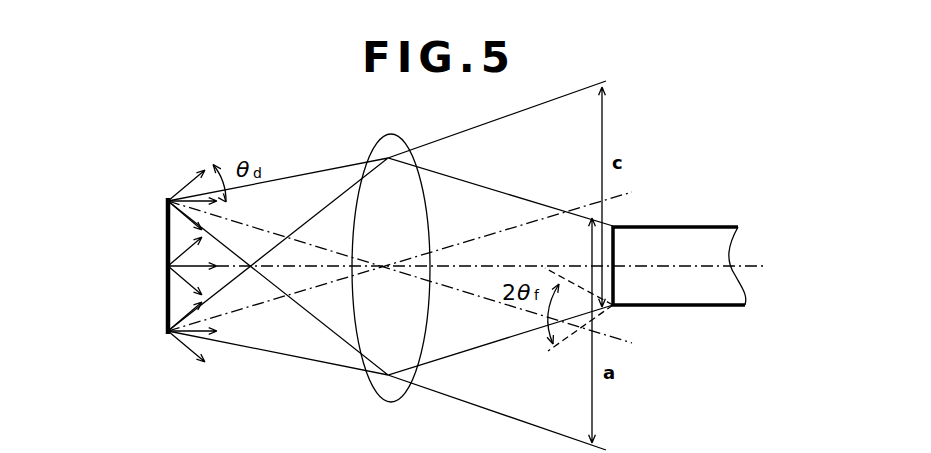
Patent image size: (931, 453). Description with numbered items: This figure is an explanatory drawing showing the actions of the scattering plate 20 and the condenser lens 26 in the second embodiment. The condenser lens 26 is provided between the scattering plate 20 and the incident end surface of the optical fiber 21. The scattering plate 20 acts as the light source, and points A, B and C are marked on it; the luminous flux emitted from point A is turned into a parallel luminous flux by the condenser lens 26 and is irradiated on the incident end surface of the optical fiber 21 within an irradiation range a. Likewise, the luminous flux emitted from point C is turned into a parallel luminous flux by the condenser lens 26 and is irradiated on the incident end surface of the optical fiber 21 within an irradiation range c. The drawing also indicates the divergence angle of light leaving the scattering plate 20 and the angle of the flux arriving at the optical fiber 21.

The scattering plate 20 is at (168, 239).
The condenser lens 26 is at (368, 153).
The optical fiber 21 is at (713, 226).